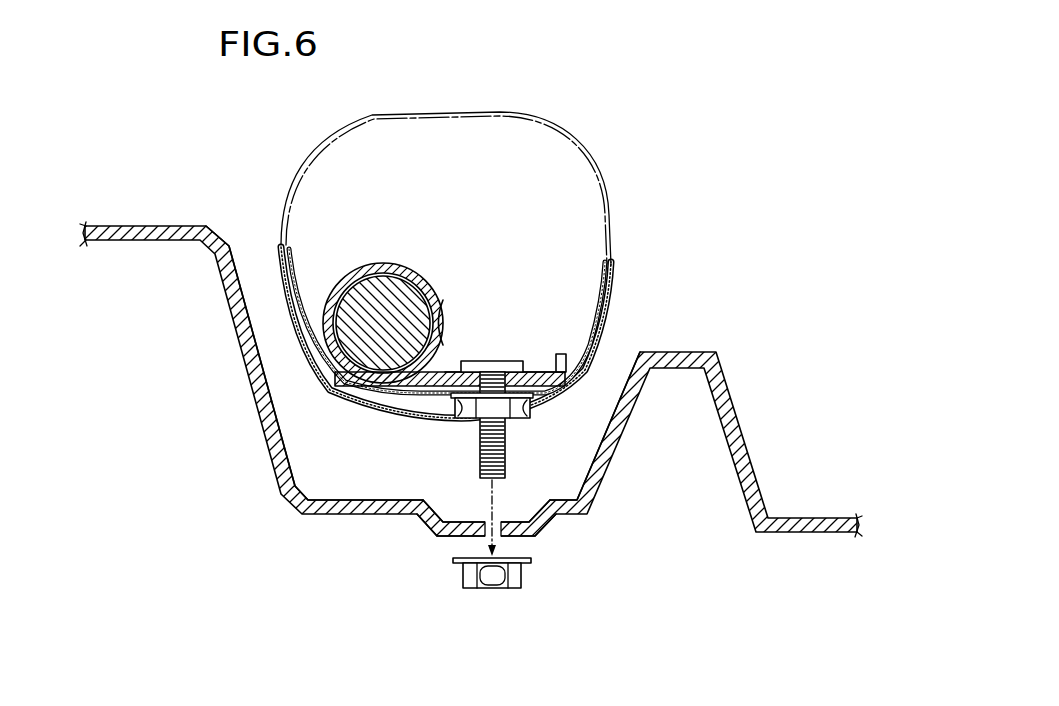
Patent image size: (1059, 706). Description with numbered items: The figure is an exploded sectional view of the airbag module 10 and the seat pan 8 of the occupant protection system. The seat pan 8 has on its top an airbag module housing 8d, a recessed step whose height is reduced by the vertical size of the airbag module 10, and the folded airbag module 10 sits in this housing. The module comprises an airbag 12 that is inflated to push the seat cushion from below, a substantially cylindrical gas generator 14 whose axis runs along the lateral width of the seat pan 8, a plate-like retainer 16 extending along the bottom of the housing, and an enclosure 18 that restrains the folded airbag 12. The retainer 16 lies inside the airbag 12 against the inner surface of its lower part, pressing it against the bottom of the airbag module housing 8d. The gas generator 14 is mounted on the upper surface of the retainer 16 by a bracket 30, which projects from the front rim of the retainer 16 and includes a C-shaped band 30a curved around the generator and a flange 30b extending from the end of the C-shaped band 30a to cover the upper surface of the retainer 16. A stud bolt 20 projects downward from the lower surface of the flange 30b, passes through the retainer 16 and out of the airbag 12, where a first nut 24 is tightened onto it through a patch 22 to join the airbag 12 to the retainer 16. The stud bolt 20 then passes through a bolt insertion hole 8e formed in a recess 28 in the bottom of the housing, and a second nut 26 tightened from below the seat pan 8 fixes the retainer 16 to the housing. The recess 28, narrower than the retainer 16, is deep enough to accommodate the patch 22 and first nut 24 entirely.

The seat pan 8 is at (790, 548).
The airbag module housing 8d is at (292, 486).
The bolt insertion hole 8e is at (497, 533).
The airbag module 10 is at (578, 110).
The airbag 12 is at (604, 257).
The gas generator 14 is at (372, 300).
The retainer 16 is at (567, 347).
The enclosure 18 is at (604, 269).
The stud bolt 20 is at (507, 462).
The patch 22 is at (515, 418).
The first nut 24 is at (470, 408).
The second nut 26 is at (524, 588).
The recess 28 is at (430, 527).
The bracket 30 is at (527, 262).
The C-shaped band 30a is at (440, 302).
The flange 30b is at (470, 360).